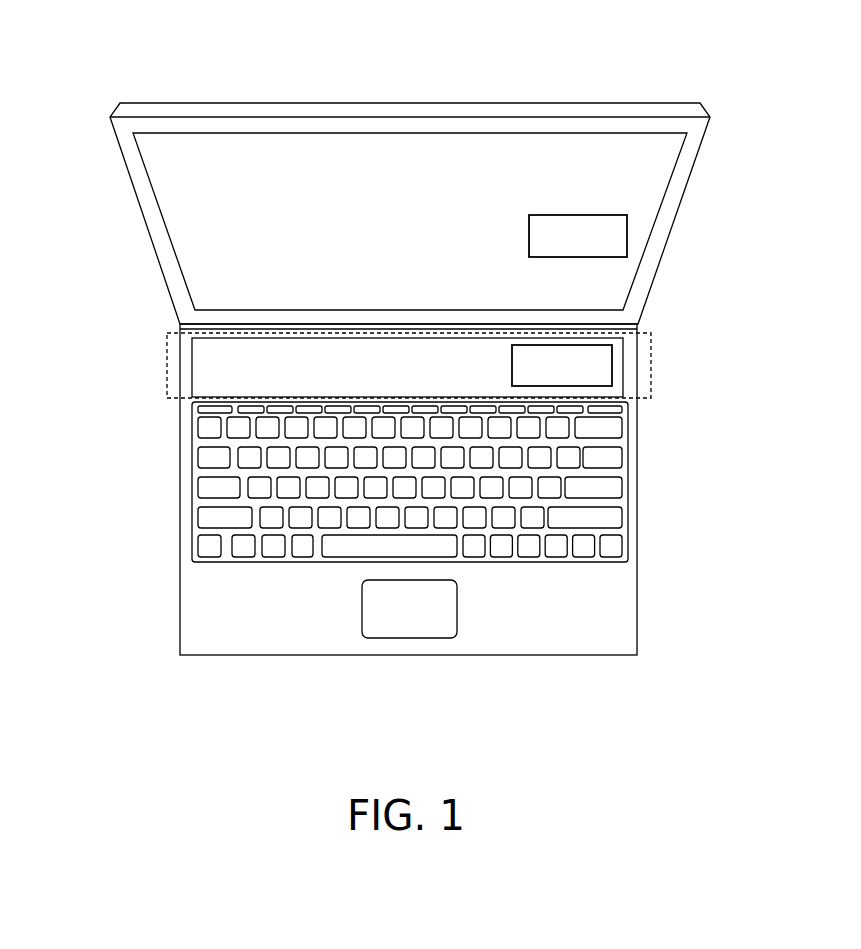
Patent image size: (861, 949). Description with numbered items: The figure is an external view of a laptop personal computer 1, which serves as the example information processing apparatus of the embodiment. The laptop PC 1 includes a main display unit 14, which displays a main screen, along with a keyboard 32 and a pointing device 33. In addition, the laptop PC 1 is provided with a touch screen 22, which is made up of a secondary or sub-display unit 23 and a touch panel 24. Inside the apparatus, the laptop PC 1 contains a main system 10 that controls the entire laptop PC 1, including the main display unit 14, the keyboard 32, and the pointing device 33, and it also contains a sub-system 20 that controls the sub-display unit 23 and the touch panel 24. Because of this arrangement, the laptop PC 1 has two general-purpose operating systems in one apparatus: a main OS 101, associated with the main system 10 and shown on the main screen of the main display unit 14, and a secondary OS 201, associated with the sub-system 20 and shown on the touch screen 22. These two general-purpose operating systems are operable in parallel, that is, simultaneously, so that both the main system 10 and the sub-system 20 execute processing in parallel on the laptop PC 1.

The laptop personal computer 1 is at (490, 103).
The main system 10 is at (671, 242).
The main display unit 14 is at (170, 240).
The main OS 101 is at (578, 236).
The sub-system 20 is at (655, 367).
The touch screen 22 is at (172, 370).
The sub-display unit 23 is at (407, 367).
The touch panel 24 is at (407, 367).
The secondary OS 201 is at (562, 365).
The keyboard 32 is at (192, 530).
The pointing device 33 is at (408, 638).